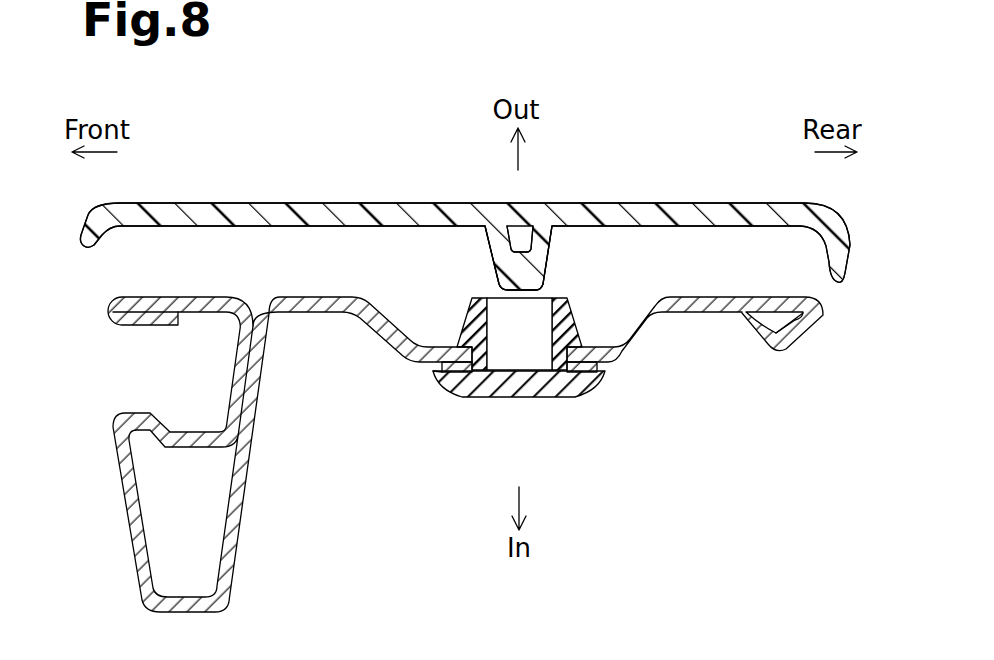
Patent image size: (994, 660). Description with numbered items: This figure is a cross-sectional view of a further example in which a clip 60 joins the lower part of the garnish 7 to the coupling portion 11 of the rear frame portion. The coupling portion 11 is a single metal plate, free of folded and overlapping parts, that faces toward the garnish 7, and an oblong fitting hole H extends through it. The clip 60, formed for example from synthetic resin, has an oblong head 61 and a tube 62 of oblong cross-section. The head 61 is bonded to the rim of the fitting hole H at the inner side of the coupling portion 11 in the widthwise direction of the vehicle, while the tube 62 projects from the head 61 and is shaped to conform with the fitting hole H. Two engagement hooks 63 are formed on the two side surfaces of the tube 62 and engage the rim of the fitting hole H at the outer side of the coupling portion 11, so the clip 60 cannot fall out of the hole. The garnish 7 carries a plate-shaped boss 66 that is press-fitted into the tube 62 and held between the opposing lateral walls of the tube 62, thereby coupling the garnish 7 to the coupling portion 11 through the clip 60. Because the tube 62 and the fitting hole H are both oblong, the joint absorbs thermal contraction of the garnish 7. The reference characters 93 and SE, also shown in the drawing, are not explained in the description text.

The garnish 7 is at (792, 203).
The roof panel 93 is at (272, 203).
The boss 66 is at (538, 240).
The coupling portion 11 is at (622, 362).
The clip 60 is at (523, 351).
The head 61 is at (520, 396).
The tube 62 is at (555, 296).
The engagement hook 63 is at (470, 318).
The fitting hole H is at (568, 345).
The sealing portion SE is at (437, 368).